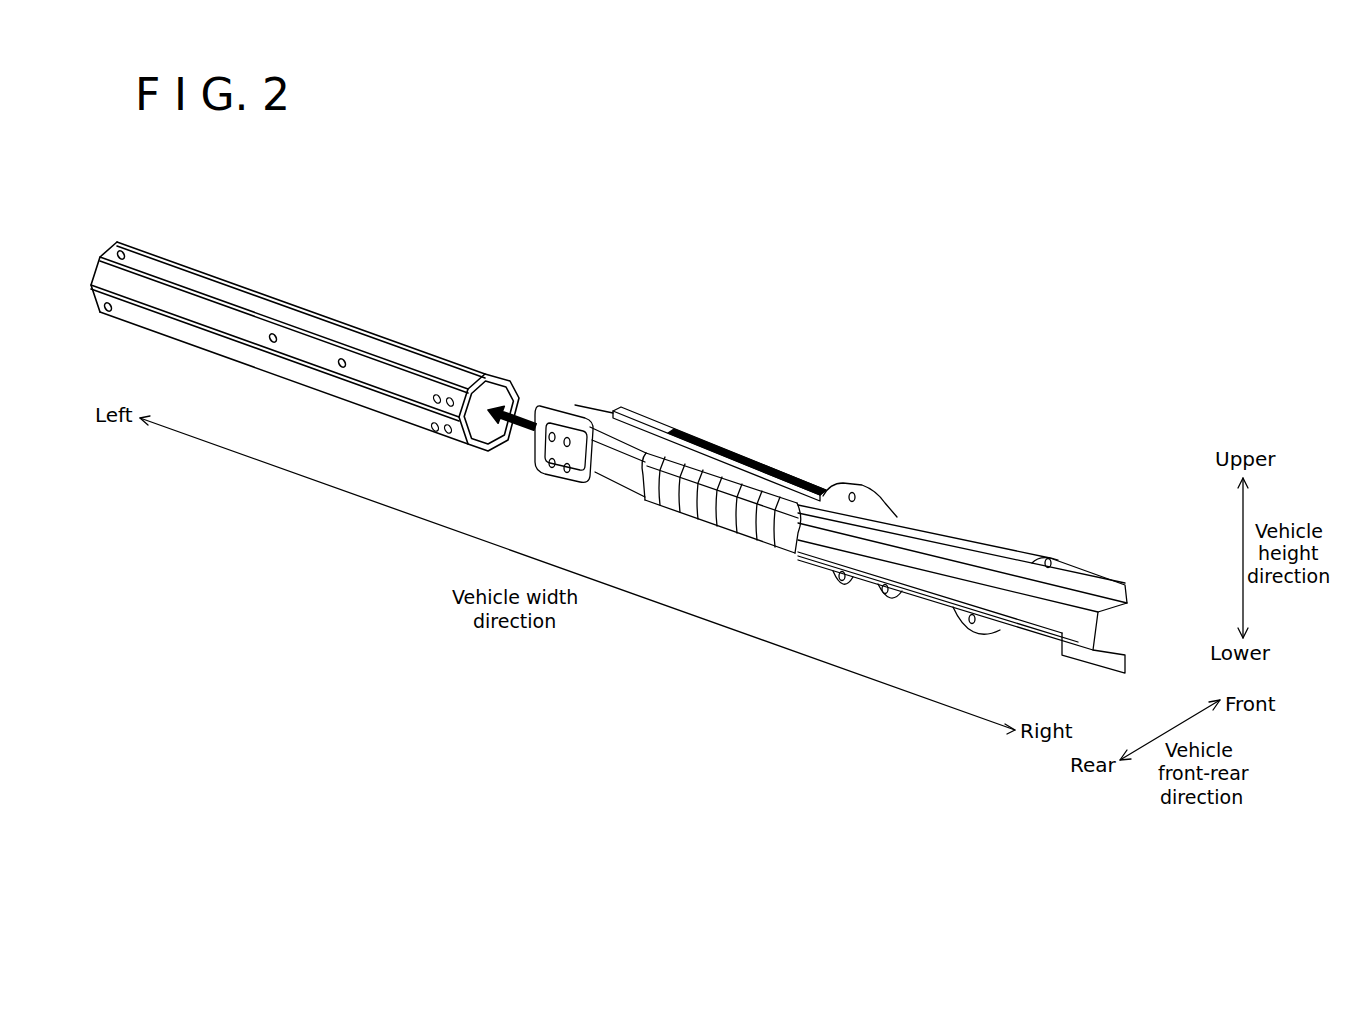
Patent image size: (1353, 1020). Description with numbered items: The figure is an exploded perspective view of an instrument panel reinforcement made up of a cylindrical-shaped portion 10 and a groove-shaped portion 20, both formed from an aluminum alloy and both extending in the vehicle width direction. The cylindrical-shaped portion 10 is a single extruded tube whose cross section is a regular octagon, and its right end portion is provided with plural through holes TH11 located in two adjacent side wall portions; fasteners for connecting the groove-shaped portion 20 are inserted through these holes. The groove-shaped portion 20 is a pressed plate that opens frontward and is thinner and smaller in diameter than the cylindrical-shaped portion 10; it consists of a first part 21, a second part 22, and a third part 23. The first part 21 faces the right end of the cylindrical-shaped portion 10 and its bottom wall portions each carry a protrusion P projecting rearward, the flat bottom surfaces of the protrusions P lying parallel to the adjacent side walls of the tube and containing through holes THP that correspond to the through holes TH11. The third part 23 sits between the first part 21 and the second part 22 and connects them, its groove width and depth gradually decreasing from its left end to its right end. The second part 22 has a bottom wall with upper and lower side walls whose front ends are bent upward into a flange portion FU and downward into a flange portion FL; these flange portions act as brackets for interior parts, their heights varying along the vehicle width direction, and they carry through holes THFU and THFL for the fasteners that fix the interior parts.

The cylindrical-shaped portion 10 is at (294, 383).
The groove-shaped portion 20 is at (712, 522).
The first part 21 is at (578, 412).
The second part 22 is at (911, 535).
The third part 23 is at (630, 422).
The protrusion P is at (587, 478).
The flange portion FU is at (868, 486).
The flange portion FL is at (860, 580).
The through holes TH11 is at (437, 395).
The through holes THP is at (552, 432).
The through holes THFU is at (852, 492).
The through holes THFL is at (838, 582).